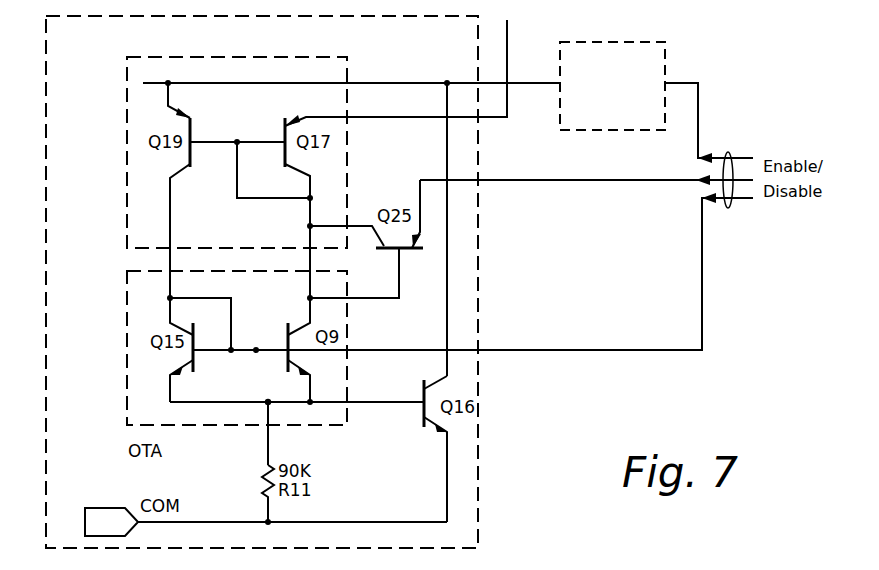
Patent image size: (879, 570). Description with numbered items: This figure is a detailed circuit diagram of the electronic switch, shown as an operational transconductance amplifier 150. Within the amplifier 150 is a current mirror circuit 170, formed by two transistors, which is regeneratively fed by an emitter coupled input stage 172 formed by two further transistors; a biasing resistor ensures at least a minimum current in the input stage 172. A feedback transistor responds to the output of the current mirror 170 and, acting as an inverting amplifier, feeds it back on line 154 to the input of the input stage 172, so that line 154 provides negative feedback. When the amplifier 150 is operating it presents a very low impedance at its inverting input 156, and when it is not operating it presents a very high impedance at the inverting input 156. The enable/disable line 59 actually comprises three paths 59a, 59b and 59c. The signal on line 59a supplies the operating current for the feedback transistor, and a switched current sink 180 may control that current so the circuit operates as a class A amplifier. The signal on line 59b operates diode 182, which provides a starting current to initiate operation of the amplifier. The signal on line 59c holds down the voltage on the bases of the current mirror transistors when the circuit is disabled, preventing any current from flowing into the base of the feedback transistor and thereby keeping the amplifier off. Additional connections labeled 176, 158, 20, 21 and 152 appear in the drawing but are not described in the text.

The operational transconductance amplifier 150 is at (484, 446).
The emitter coupled input stage 172 is at (127, 150).
The current mirror circuit 170 is at (127, 392).
The switched current sink 180 is at (606, 42).
The inverting input 156 is at (169, 80).
The emitter lead of Q19 176 is at (170, 98).
The input line 158 is at (507, 58).
The line 154 is at (447, 153).
The diode 182 is at (400, 280).
The line 59a is at (688, 82).
The line 59b is at (598, 180).
The line 59c is at (598, 350).
The enable/disable line 59 is at (727, 204).
The node 20 is at (168, 298).
The node 21 is at (297, 390).
The common node 152 is at (266, 405).